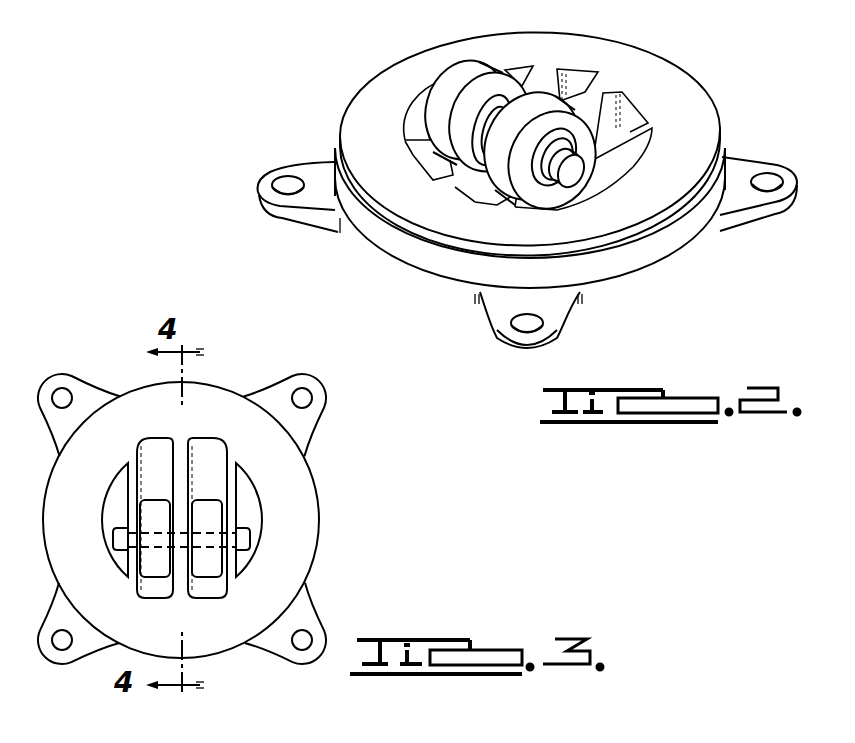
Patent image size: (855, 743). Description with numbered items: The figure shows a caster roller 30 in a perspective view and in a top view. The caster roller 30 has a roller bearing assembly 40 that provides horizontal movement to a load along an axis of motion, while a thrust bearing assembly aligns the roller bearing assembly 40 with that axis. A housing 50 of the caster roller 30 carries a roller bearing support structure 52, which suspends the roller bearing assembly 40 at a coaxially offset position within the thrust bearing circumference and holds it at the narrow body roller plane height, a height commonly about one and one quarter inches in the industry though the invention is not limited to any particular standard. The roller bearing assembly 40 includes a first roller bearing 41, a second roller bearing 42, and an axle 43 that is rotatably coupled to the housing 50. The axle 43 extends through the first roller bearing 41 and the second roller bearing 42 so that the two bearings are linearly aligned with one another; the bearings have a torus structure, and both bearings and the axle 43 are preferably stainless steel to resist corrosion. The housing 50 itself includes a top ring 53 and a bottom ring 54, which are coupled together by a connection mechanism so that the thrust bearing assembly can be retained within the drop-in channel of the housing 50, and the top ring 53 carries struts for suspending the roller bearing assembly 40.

In FIG. 2, the caster roller 30 is at (712, 83).
In FIG. 2, the roller bearing assembly 40 is at (533, 104).
In FIG. 3, the roller bearing assembly 40 is at (198, 565).
In FIG. 3, the first roller bearing 41 is at (152, 566).
In FIG. 3, the second roller bearing 42 is at (214, 559).
In FIG. 3, the axle 43 is at (254, 541).
In FIG. 2, the housing 50 is at (718, 125).
In FIG. 3, the housing 50 is at (235, 392).
In FIG. 3, the roller bearing support structure 52 is at (186, 458).
In FIG. 3, the top ring 53 is at (70, 461).
In FIG. 3, the bottom ring 54 is at (83, 398).